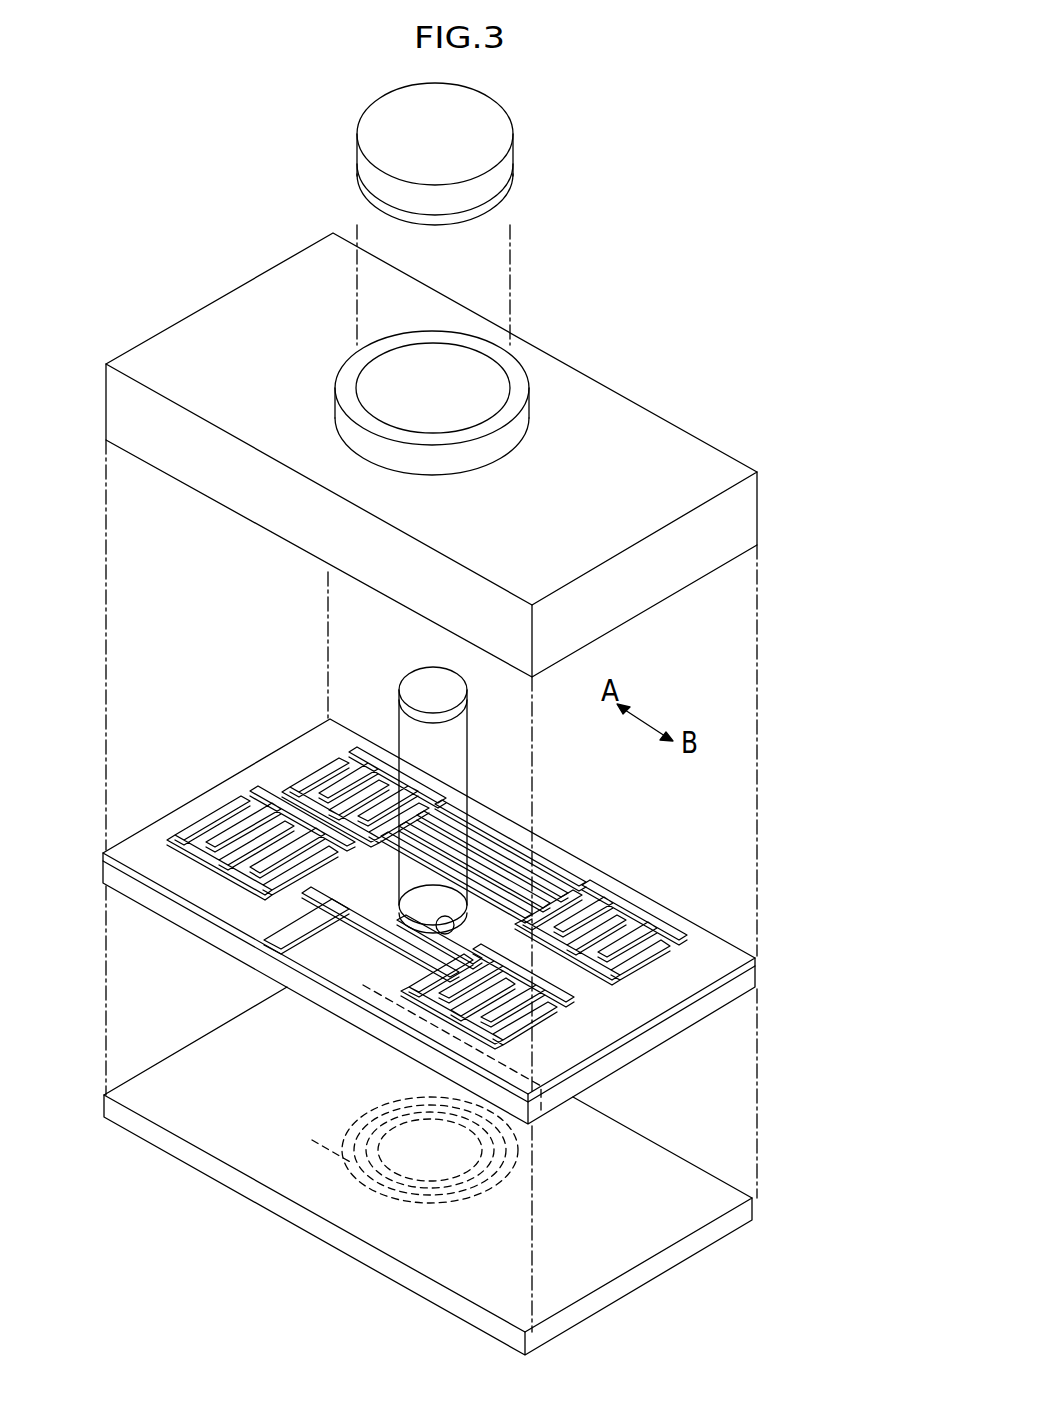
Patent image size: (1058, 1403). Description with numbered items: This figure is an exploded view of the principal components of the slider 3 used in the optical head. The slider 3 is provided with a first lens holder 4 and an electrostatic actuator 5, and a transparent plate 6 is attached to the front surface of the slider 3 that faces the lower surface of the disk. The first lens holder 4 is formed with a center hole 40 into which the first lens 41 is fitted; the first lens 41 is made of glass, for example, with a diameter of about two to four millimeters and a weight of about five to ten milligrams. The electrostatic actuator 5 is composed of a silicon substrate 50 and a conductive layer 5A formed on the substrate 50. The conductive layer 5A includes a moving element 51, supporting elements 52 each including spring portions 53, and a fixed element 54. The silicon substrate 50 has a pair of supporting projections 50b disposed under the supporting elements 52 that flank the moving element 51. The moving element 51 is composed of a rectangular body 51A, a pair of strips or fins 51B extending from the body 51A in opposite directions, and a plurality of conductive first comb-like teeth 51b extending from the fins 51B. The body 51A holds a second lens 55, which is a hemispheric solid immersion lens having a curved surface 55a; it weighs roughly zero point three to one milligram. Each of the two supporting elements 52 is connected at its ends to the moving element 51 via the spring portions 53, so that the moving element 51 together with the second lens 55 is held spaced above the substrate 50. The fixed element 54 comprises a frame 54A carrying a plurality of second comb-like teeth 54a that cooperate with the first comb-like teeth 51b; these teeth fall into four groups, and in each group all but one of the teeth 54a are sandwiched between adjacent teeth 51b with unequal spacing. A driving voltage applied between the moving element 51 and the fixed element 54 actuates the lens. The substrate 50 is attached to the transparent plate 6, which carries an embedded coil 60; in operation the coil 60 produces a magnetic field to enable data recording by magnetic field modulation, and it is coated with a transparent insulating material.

The slider 3 is at (810, 668).
The first lens holder 4 is at (678, 402).
The center hole 40 is at (395, 353).
The first lens 41 is at (497, 130).
The electrostatic actuator 5 is at (839, 926).
The conductive layer 5A is at (762, 957).
The silicon substrate 50 is at (765, 972).
The supporting projections 50b is at (300, 938).
The moving element 51 is at (527, 812).
The rectangular body 51A is at (553, 855).
The fins 51B is at (283, 825).
The first comb-like teeth 51b is at (380, 808).
The supporting elements 52 is at (555, 882).
The spring portions 53 is at (440, 848).
The fixed element 54 is at (525, 803).
The frame 54A is at (545, 830).
The second comb-like teeth 54a is at (318, 785).
The second lens 55 is at (400, 677).
The curved surface 55a is at (466, 692).
The transparent plate 6 is at (698, 1148).
The coil 60 is at (405, 1195).